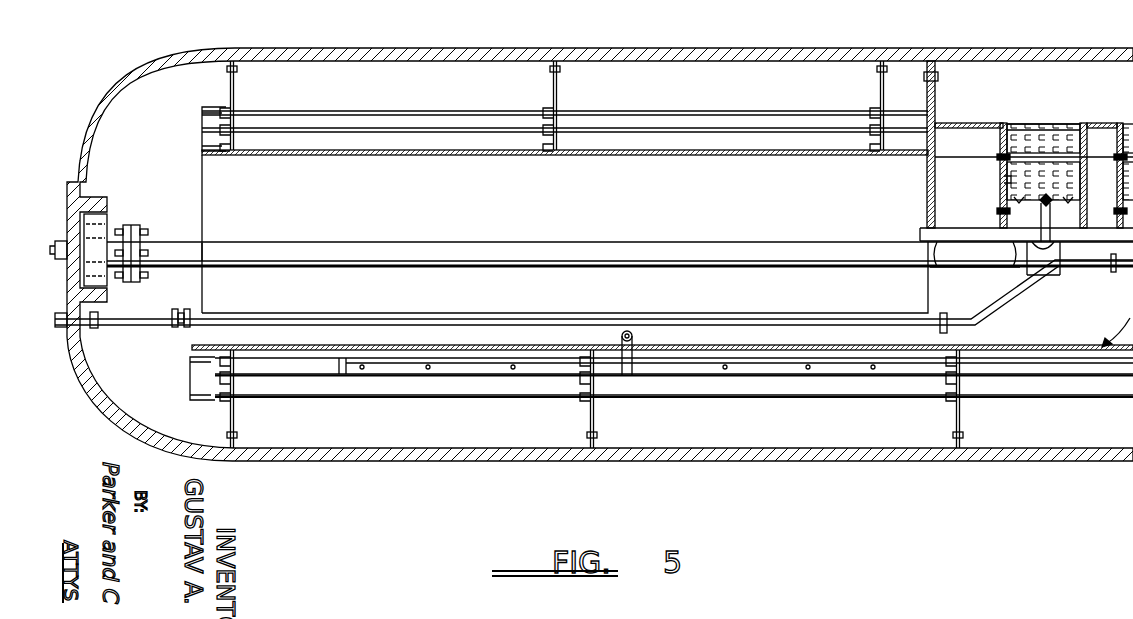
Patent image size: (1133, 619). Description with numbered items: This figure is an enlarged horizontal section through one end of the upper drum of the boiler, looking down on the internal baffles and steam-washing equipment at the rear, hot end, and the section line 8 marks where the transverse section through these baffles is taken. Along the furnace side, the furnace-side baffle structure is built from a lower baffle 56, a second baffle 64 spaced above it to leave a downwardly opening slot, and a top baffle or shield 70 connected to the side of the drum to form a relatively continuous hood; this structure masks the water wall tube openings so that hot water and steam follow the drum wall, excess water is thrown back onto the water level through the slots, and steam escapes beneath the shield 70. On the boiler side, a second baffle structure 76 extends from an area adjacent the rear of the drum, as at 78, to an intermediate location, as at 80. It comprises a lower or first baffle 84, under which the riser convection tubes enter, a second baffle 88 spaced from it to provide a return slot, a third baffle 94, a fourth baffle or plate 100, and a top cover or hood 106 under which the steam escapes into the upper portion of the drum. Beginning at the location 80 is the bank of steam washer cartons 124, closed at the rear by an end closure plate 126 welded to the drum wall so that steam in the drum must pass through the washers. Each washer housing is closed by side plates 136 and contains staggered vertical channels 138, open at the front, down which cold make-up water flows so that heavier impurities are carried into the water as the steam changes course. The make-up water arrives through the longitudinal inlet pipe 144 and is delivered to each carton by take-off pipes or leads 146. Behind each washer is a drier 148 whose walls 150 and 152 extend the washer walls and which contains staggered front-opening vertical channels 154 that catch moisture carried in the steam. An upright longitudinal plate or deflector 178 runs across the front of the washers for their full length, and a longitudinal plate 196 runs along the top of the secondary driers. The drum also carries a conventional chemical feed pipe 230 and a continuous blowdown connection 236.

The section line 8 is at (747, 23).
The lower baffle 56 is at (417, 398).
The second baffle 64 is at (317, 375).
The top baffle or shield 70 is at (807, 348).
The second baffle structure 76 is at (188, 197).
The rear end location of boiler-side baffle structure 78 is at (200, 133).
The intermediate location 80 is at (930, 118).
The lower or first baffle 84 is at (908, 300).
The second baffle 88 is at (218, 193).
The third baffle 94 is at (753, 117).
The fourth baffle or plate 100 is at (645, 132).
The top cover, shield or hood 106 is at (695, 158).
The carton or steam washer 124 is at (1018, 183).
The end closure plate 126 is at (935, 110).
The side plates 136 is at (1003, 178).
The vertical channels 138 is at (1035, 198).
The inlet pipe 144 is at (755, 253).
The take-off pipes or leads 146 is at (1045, 213).
The drier 148 is at (1048, 128).
The drier wall 150 is at (1002, 133).
The drier wall 152 is at (1088, 127).
The vertical tubes or channels 154 is at (1032, 128).
The plate or deflector 178 is at (938, 233).
The longitudinal plate 196 is at (1080, 198).
The chemical feed pipe 230 is at (988, 318).
The continuous blowdown connection 236 is at (658, 370).